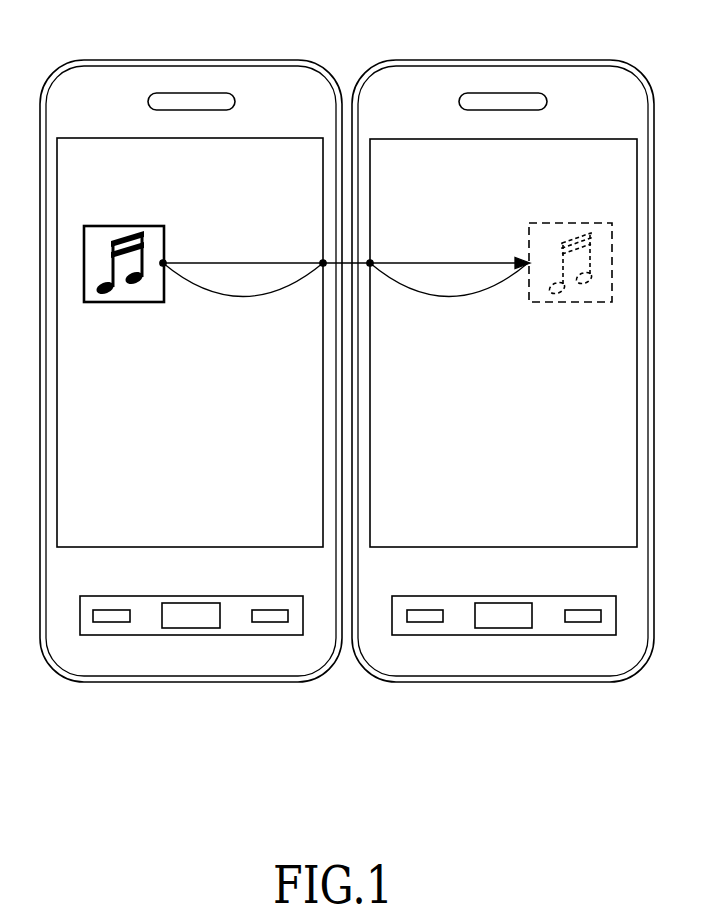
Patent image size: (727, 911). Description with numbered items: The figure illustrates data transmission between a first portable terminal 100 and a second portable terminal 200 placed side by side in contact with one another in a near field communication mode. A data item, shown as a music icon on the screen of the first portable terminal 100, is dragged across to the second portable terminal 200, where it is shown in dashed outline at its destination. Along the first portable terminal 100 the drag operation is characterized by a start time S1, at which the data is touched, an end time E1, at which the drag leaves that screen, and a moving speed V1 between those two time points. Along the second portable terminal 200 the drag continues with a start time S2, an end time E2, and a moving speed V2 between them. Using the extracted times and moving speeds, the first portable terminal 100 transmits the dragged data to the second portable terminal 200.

The first portable terminal 100 is at (190, 60).
The second portable terminal 200 is at (503, 60).
The start time S1 is at (163, 262).
The end time E1 is at (322, 261).
The start time S2 is at (371, 262).
The end time E2 is at (528, 261).
The moving speed V1 is at (243, 286).
The moving speed V2 is at (449, 286).